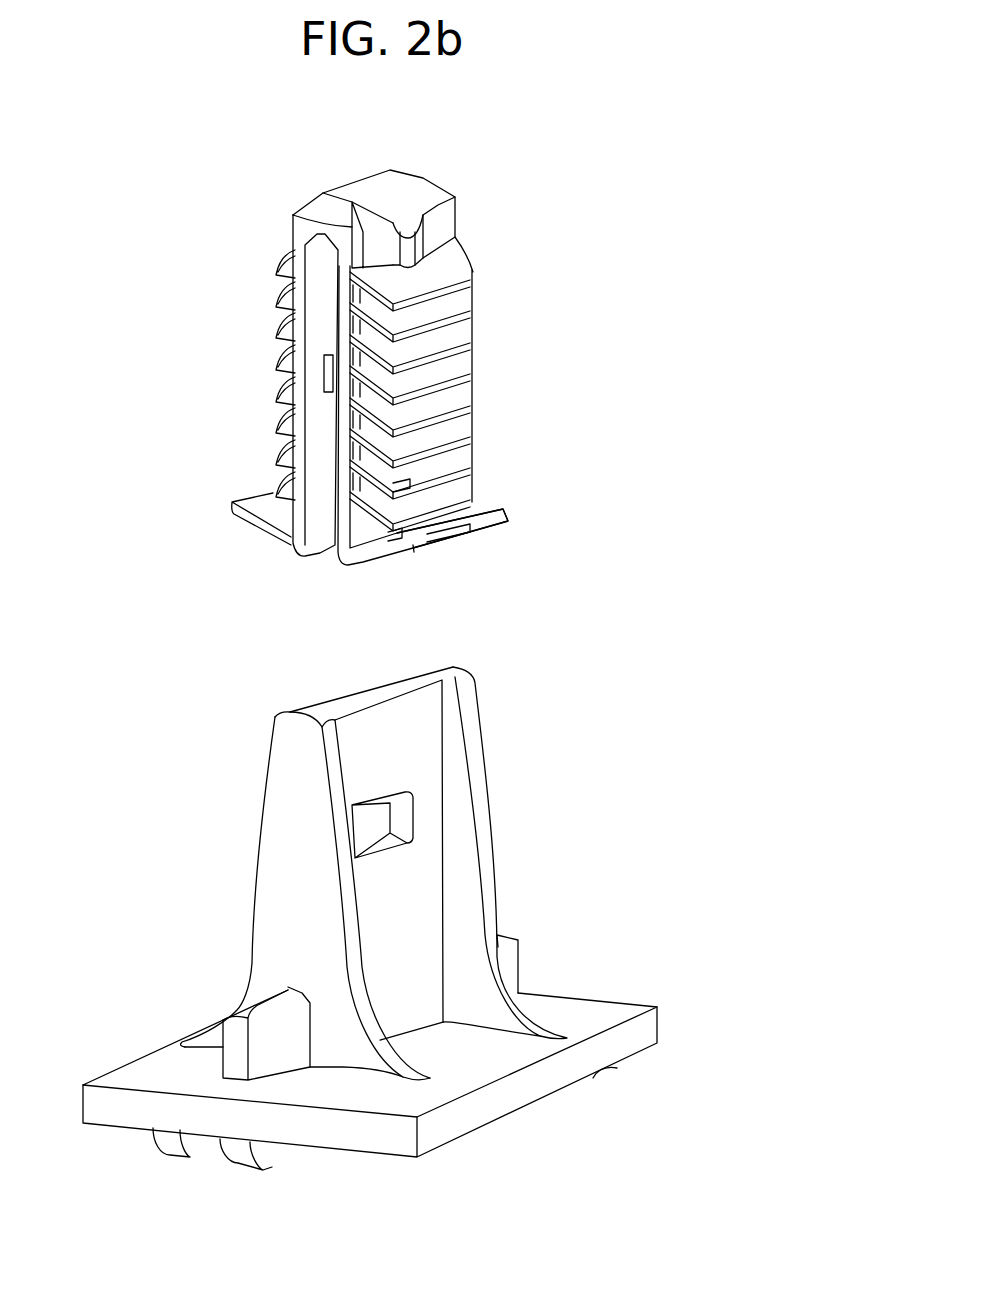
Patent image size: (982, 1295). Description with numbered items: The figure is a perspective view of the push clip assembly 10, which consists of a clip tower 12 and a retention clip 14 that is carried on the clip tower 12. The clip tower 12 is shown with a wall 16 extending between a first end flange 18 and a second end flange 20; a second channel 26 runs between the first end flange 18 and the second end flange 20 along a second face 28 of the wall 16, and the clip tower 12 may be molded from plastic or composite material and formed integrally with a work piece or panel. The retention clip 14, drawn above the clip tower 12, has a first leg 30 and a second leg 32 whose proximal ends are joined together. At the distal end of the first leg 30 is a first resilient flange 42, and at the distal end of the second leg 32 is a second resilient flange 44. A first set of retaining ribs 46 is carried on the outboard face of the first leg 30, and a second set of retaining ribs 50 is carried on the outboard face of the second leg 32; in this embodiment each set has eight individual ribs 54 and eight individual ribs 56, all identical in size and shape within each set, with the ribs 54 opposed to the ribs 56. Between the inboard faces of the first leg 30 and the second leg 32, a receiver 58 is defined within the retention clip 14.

The push clip assembly 10 is at (683, 205).
The clip tower 12 is at (640, 1092).
The retention clip 14 is at (507, 457).
The wall 16 is at (347, 698).
The first end flange 18 is at (473, 773).
The second end flange 20 is at (285, 845).
The second channel 26 is at (450, 878).
The second face 28 is at (408, 977).
The first leg 30 is at (344, 300).
The second leg 32 is at (300, 338).
The first resilient flange 42 is at (427, 553).
The second resilient flange 44 is at (248, 525).
The first set of retaining ribs 46 is at (510, 330).
The second set of retaining ribs 50 is at (248, 300).
The individual ribs 54 is at (458, 392).
The individual ribs 56 is at (277, 367).
The receiver 58 is at (320, 420).